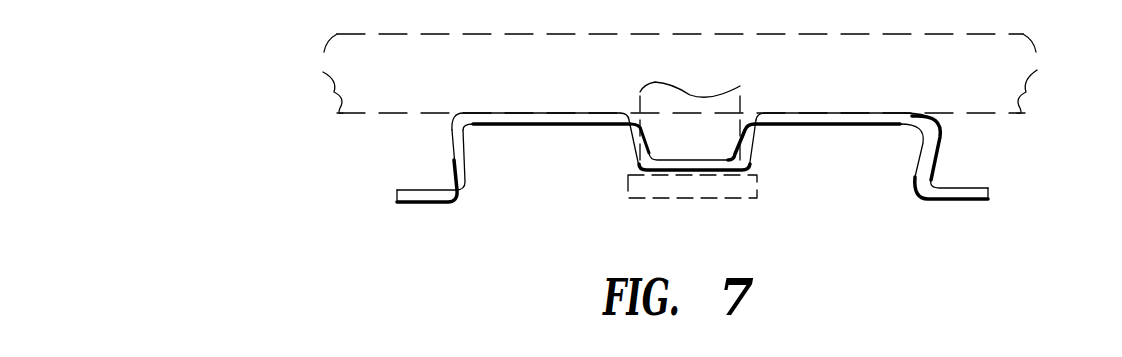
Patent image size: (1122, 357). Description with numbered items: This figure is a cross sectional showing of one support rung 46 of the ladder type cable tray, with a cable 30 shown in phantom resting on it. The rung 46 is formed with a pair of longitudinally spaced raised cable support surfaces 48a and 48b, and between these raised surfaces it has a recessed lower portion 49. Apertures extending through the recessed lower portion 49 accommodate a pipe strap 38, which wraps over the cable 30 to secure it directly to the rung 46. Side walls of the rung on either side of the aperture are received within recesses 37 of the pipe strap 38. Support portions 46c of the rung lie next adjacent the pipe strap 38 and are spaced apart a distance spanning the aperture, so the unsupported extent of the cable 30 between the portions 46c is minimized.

The cable 30 is at (362, 72).
The support rung 46 is at (748, 132).
The support portions 46c is at (595, 118).
The raised cable support surface 48a is at (542, 123).
The raised cable support surface 48b is at (800, 115).
The recesses 37 is at (653, 142).
The pipe strap 38 is at (690, 118).
The recessed lower portion 49 is at (697, 168).